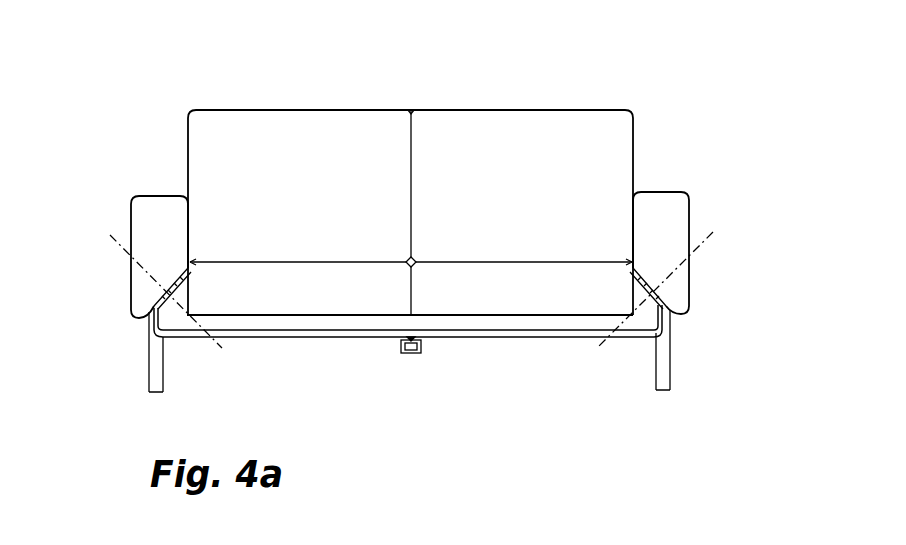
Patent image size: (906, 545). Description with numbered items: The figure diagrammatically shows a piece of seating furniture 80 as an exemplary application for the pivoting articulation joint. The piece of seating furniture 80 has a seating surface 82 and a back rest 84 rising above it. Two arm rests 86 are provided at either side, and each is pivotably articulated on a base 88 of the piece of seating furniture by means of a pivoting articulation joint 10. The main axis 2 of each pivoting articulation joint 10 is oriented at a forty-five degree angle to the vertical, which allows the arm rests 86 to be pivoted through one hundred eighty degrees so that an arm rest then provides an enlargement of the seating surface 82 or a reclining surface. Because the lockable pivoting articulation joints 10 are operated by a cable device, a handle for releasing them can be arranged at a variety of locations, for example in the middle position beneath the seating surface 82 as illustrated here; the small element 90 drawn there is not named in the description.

The piece of seating furniture 80 is at (148, 149).
The seating surface 82 is at (358, 262).
The back rest 84 is at (472, 145).
The arm rest 86 is at (672, 213).
The base 88 is at (547, 318).
The control unit 90 is at (405, 355).
The main axis 2 is at (700, 243).
The pivoting articulation joint 10 is at (663, 310).